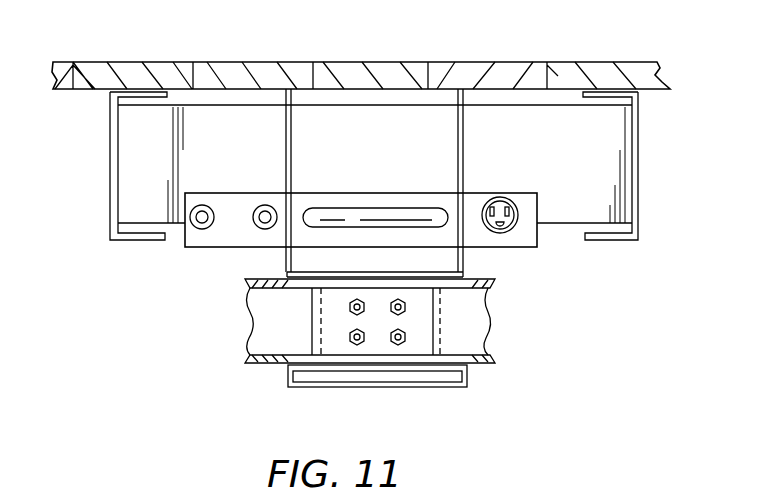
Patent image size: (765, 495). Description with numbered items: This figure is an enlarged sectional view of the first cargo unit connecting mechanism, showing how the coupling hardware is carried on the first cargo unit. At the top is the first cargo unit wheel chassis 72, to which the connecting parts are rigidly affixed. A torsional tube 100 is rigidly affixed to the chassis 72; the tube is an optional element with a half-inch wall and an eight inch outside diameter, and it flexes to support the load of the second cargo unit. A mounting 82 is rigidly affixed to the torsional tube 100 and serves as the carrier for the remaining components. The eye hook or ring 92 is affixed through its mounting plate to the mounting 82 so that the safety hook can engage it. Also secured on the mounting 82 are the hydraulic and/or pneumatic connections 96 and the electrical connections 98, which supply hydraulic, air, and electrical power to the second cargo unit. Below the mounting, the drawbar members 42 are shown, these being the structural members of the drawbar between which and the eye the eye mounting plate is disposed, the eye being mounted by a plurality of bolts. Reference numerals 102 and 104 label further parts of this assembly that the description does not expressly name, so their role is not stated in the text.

The floor panel 102 is at (518, 64).
The first cargo unit wheel chassis 72 is at (108, 190).
The torsional tube 100 is at (606, 166).
The hydraulic and/or pneumatic connections 96 is at (258, 205).
The eye hook or ring 92 is at (370, 215).
The electrical connections 98 is at (500, 197).
The mounting 82 is at (465, 258).
The members of the drawbar 42 is at (265, 336).
The bolts 104 is at (362, 315).